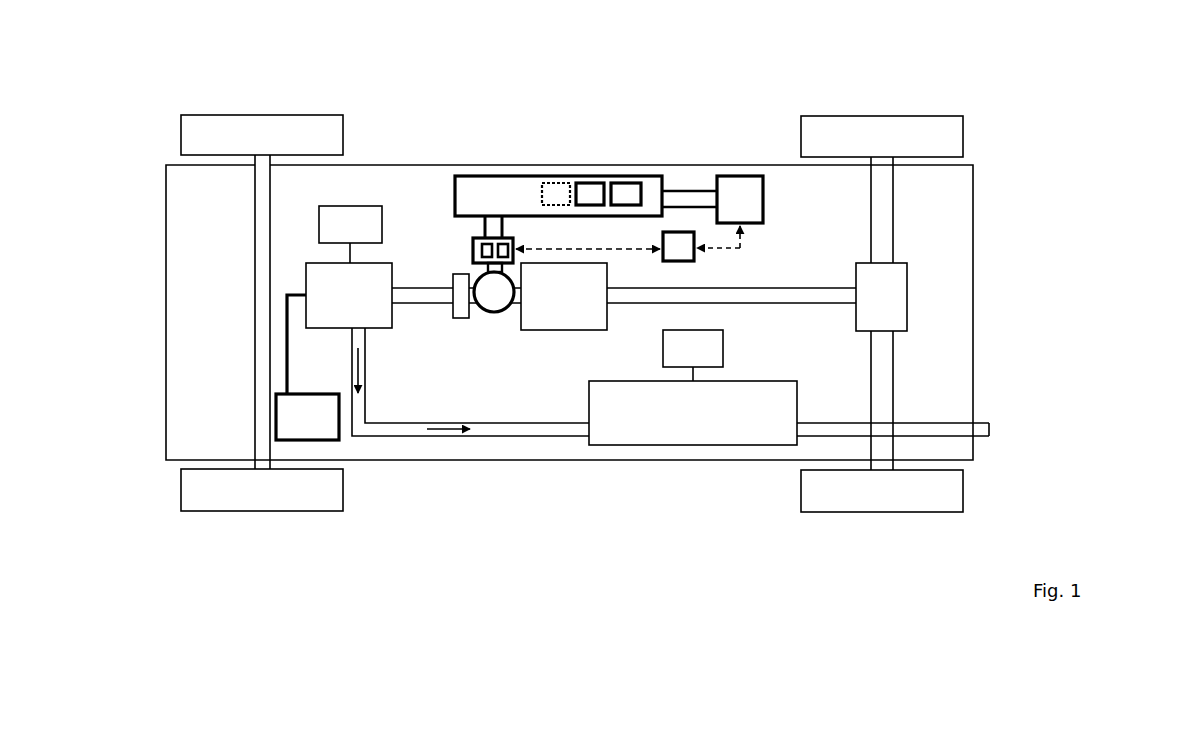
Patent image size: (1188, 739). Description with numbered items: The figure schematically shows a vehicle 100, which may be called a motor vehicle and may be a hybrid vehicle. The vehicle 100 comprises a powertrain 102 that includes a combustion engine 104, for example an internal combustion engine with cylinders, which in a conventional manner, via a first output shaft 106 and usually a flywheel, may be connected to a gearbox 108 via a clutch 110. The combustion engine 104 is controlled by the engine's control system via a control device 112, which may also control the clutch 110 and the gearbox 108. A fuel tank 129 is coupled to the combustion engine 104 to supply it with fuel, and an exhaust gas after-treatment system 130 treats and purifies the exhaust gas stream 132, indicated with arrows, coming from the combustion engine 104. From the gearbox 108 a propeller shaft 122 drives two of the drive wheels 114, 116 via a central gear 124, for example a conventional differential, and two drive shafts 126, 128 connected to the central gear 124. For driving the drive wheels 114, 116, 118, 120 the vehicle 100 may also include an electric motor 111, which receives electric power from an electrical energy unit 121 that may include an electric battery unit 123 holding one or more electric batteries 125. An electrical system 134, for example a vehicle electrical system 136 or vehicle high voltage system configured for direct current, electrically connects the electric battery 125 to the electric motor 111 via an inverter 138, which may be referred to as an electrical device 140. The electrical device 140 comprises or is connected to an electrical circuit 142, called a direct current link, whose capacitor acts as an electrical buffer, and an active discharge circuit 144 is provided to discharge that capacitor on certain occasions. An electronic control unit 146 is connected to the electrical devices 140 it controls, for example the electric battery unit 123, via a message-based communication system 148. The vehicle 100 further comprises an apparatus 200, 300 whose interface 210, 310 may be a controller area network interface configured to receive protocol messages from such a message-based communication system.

The vehicle 100 is at (1068, 107).
The powertrain 102 is at (503, 483).
The combustion engine 104 is at (332, 322).
The first output shaft 106 is at (407, 290).
The gearbox 108 is at (575, 323).
The clutch 110 is at (462, 308).
The electric motor 111 is at (498, 297).
The control device 112 is at (350, 230).
The drive wheel 114 is at (964, 130).
The drive wheel 116 is at (958, 492).
The drive wheel 118 is at (298, 122).
The drive wheel 120 is at (308, 500).
The electrical energy unit 121 is at (618, 176).
The propeller shaft 122 is at (797, 300).
The electric battery unit 123 is at (652, 185).
The central gear 124 is at (905, 290).
The electric battery 125 is at (590, 183).
The drive shaft 126 is at (885, 207).
The drive shaft 128 is at (888, 404).
The fuel tank 129 is at (327, 432).
The exhaust gas after-treatment system 130 is at (705, 442).
The exhaust gas stream 132 is at (360, 357).
The electrical system 134 is at (492, 212).
The vehicle electrical system 136 is at (498, 223).
The inverter 138 is at (481, 240).
The electrical device 140 is at (473, 233).
The electrical circuit 142 is at (502, 244).
The active discharge circuit 144 is at (473, 258).
The electronic control unit 146 is at (745, 188).
The message-based communication system 148 is at (694, 190).
The apparatus 200 is at (742, 255).
The apparatus 300 is at (699, 258).
The interface 210 is at (646, 293).
The interface 310 is at (677, 257).